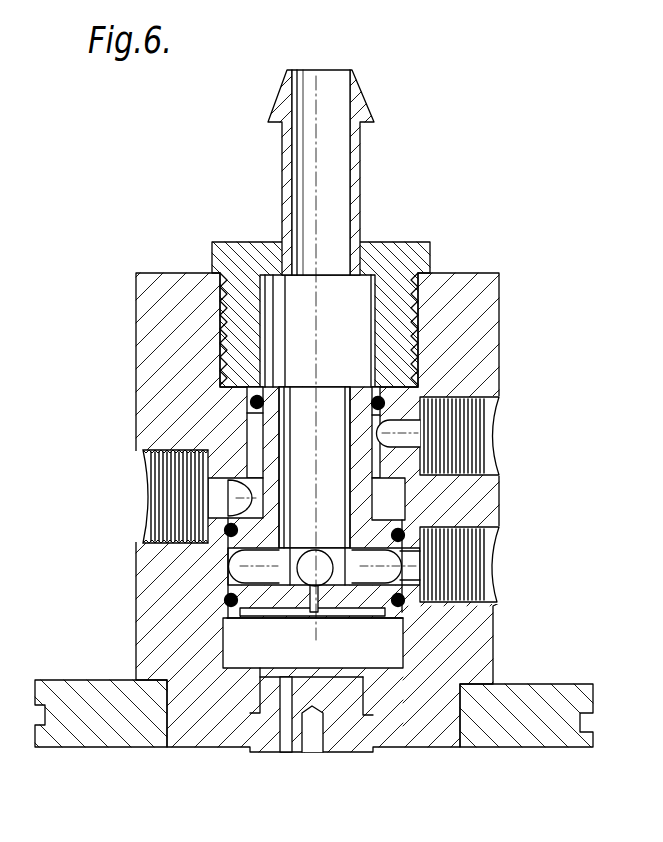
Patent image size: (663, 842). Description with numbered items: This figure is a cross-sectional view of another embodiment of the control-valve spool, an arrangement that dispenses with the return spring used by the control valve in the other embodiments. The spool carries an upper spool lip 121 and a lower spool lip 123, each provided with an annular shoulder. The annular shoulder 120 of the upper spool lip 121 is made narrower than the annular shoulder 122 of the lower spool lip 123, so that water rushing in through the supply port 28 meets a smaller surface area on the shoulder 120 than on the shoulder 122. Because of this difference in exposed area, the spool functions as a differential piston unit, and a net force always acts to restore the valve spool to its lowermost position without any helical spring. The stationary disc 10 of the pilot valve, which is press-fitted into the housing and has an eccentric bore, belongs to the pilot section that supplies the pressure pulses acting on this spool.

The stationary disc 10 is at (351, 753).
The supply port 28 is at (212, 505).
The annular shoulder 120 is at (256, 422).
The upper spool lip 121 is at (318, 374).
The annular shoulder 122 is at (213, 490).
The lower spool lip 123 is at (258, 560).